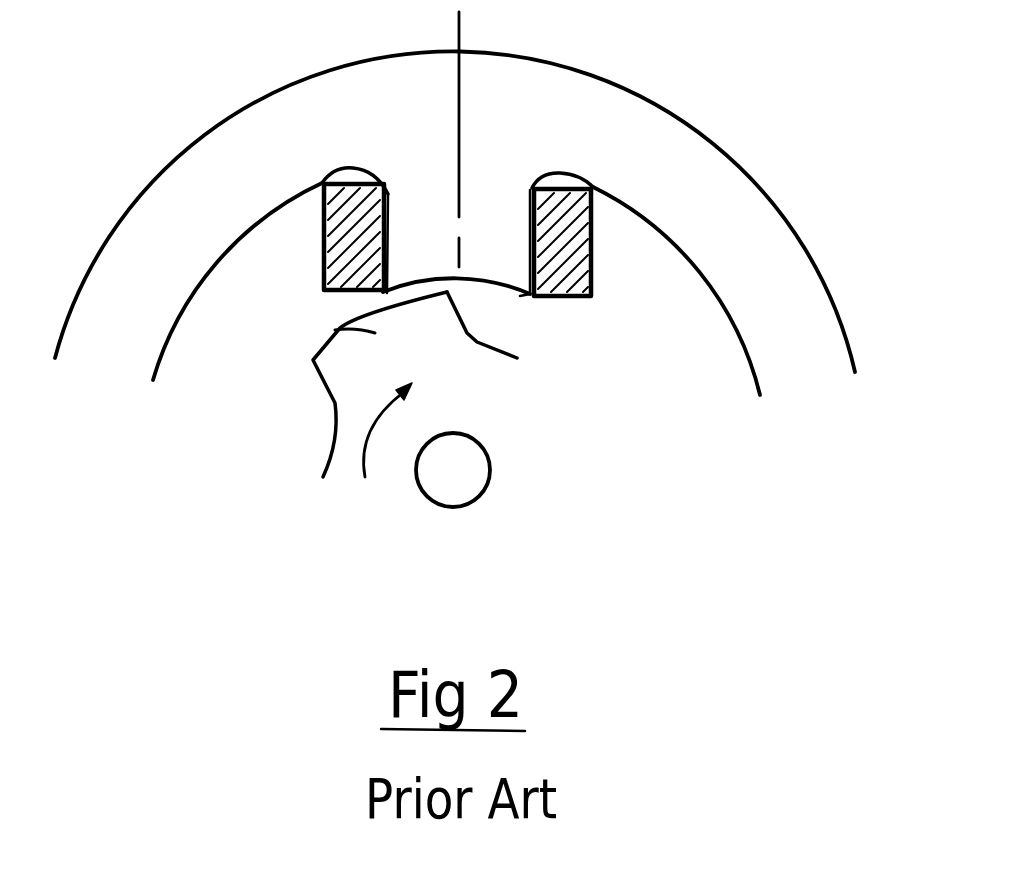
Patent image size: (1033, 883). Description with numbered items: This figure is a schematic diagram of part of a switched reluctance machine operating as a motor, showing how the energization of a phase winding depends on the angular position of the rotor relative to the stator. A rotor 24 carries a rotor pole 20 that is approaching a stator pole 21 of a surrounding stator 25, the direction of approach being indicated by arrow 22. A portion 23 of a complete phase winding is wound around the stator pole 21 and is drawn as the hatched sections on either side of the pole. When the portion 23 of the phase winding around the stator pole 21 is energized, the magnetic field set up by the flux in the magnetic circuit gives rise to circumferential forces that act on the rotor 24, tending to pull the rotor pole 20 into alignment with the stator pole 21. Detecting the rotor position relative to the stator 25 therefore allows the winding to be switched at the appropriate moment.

The rotor pole 20 is at (340, 328).
The stator pole 21 is at (492, 208).
The arrow 22 is at (417, 421).
The portion of phase winding 23 is at (598, 267).
The rotor 24 is at (498, 427).
The stator 25 is at (677, 172).